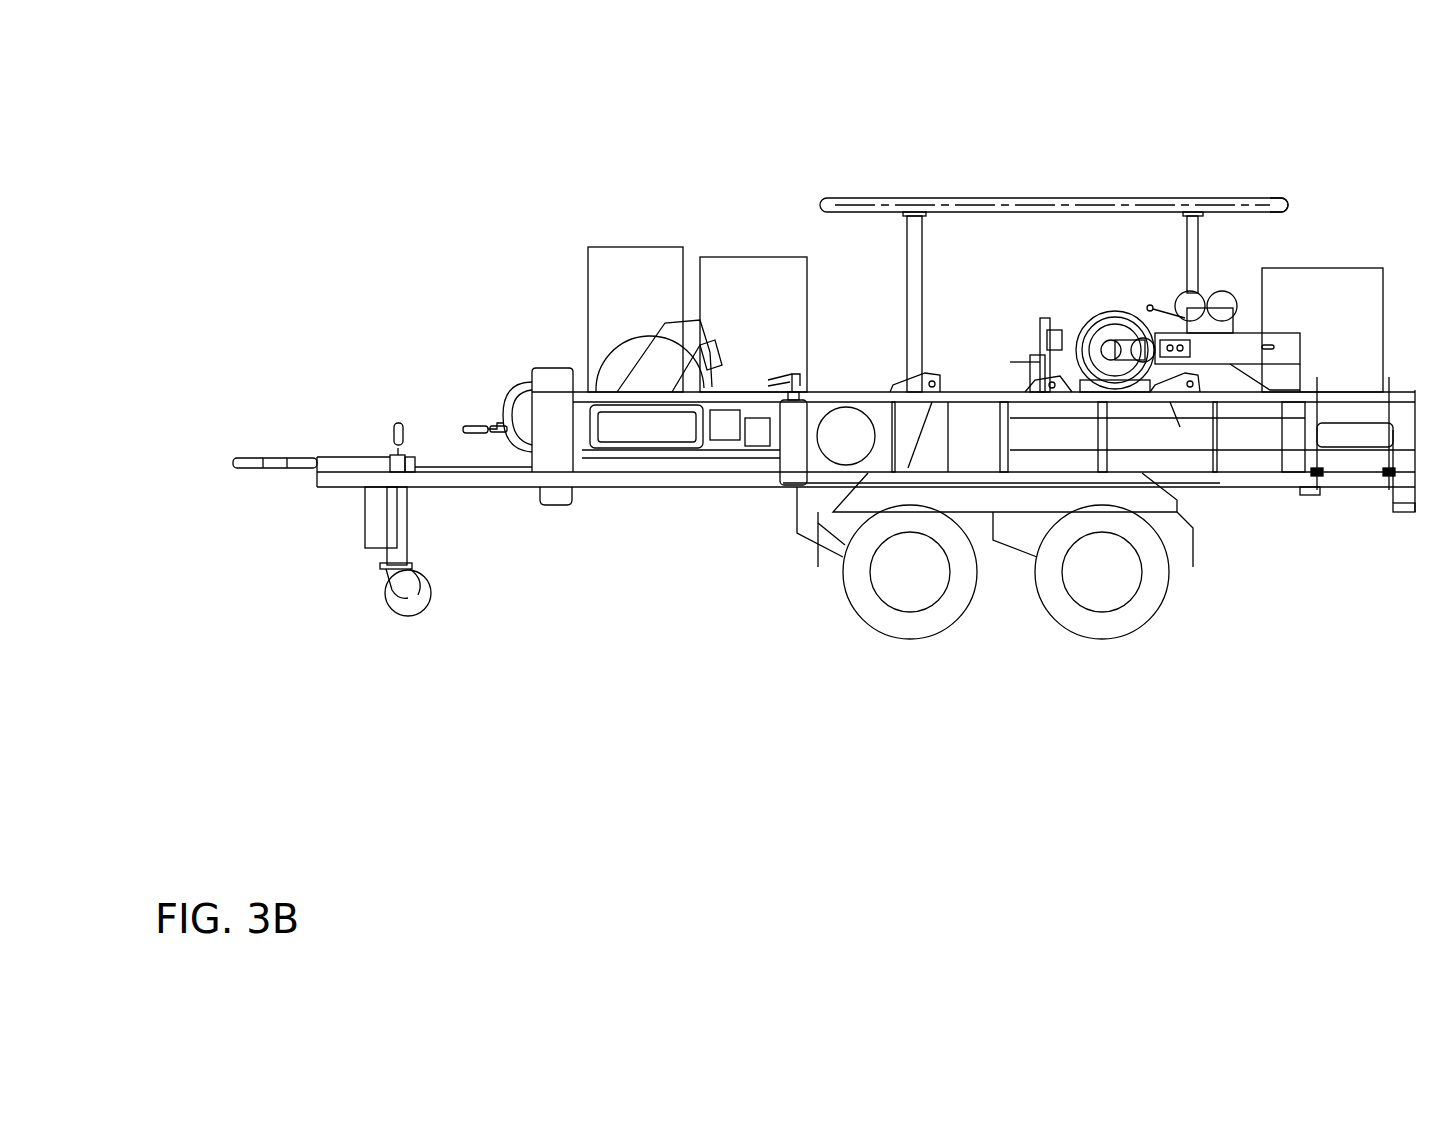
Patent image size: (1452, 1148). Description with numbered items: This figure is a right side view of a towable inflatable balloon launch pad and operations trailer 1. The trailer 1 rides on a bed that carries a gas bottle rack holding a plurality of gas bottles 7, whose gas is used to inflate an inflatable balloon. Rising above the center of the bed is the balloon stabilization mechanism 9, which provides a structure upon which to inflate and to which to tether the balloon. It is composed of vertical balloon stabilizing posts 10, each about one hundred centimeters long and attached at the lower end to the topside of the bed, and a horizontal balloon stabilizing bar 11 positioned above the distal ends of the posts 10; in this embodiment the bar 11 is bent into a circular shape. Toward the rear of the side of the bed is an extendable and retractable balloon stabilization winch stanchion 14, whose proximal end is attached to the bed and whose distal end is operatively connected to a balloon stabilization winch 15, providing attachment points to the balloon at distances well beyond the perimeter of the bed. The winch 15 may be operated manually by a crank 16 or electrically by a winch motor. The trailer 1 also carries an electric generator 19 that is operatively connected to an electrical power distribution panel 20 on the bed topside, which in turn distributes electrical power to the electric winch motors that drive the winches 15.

The trailer 1 is at (328, 155).
The gas bottle 7 is at (846, 436).
The balloon stabilization mechanism 9 is at (1027, 170).
The vertical balloon stabilizing post 10 is at (905, 291).
The horizontal balloon stabilizing bar 11 is at (1290, 200).
The balloon stabilization winch stanchion 14 is at (1248, 352).
The balloon stabilization winch 15 is at (1080, 325).
The crank 16 is at (1148, 305).
The electric generator 19 is at (745, 257).
The electrical power distribution panel 20 is at (640, 248).